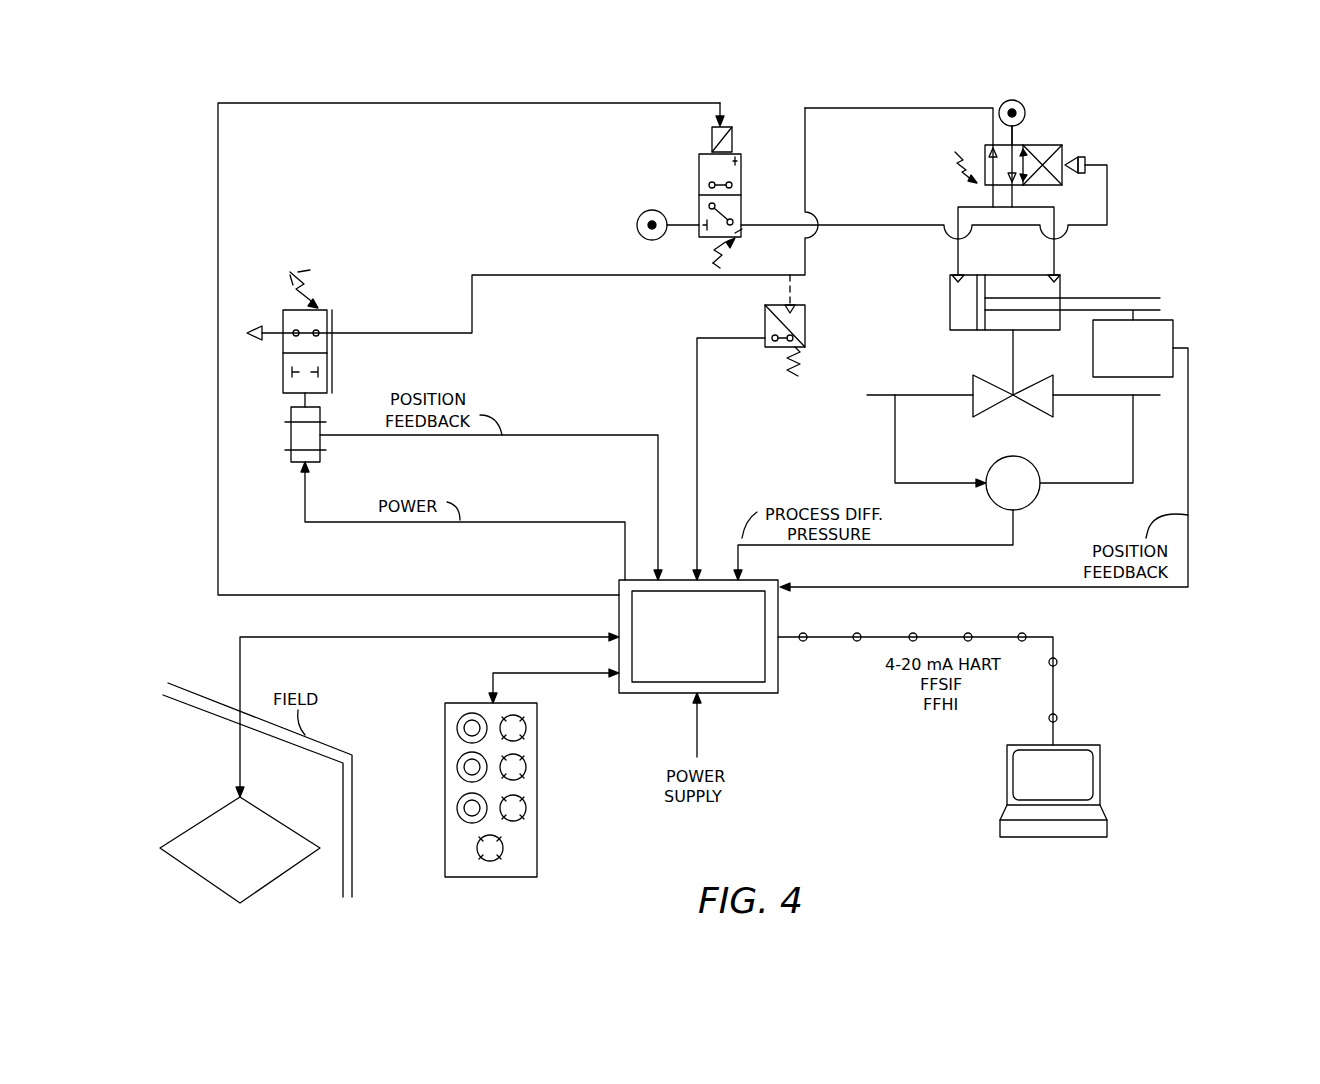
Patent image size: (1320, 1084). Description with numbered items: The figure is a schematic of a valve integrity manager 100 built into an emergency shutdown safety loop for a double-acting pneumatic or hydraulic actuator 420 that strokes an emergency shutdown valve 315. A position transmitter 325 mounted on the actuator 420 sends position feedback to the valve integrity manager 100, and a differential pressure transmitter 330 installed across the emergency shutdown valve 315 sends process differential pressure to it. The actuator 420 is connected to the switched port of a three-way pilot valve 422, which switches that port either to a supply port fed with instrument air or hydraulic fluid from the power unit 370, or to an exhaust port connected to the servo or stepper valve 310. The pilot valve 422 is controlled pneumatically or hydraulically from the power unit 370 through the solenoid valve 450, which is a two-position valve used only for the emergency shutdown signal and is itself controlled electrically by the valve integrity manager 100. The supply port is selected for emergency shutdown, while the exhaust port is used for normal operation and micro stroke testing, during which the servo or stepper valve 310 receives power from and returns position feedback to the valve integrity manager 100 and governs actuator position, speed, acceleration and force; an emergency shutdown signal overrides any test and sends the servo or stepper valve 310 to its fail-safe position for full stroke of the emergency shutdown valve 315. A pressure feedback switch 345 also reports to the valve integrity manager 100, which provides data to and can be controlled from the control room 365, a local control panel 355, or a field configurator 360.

The valve integrity manager 100 is at (778, 683).
The servo or stepper valve 310 is at (322, 309).
The emergency shutdown valve 315 is at (1092, 432).
The position transmitter 325 is at (1173, 332).
The differential pressure transmitter 330 is at (1036, 500).
The pressure feedback switch 345 is at (728, 470).
The local control panel 355 is at (537, 785).
The field configurator 360 is at (1053, 818).
The control room 365 is at (268, 815).
The power unit 370 is at (646, 240).
The double-acting actuator 420 is at (1084, 316).
The three-way pilot valve 422 is at (955, 152).
The solenoid valve 450 is at (699, 160).